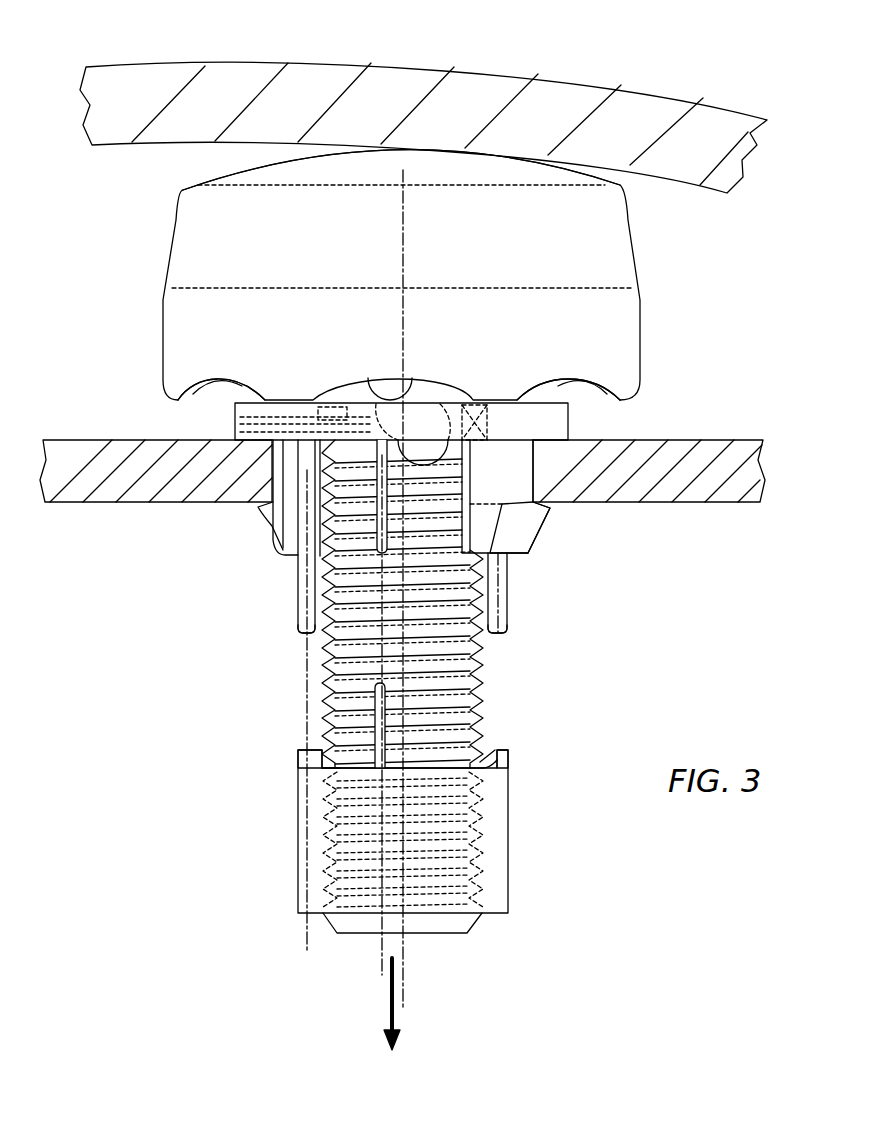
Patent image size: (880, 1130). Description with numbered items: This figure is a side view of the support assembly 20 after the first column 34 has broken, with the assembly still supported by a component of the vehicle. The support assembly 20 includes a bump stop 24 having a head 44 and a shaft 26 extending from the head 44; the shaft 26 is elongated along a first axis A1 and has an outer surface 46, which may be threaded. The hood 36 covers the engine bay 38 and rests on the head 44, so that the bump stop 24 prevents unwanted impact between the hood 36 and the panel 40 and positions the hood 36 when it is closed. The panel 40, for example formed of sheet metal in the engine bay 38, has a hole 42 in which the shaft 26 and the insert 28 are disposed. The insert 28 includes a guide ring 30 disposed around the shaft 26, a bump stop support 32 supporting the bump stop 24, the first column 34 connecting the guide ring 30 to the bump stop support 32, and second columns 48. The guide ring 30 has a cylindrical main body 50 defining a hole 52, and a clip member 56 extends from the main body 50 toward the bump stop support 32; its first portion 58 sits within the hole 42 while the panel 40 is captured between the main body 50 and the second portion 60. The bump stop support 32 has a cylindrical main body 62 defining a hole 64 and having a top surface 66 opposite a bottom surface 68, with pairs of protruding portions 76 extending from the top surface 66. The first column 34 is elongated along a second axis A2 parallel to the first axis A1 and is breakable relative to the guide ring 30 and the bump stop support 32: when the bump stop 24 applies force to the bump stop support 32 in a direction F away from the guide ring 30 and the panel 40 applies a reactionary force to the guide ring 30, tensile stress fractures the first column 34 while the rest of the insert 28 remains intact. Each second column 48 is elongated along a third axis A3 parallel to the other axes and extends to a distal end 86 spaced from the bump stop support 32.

The support assembly 20 is at (80, 377).
The bump stop 24 is at (617, 323).
The shaft 26 is at (438, 485).
The insert 28 is at (386, 855).
The guide ring 30 is at (268, 400).
The bump stop support 32 is at (445, 839).
The first column 34 is at (380, 480).
The hood 36 is at (475, 92).
The engine bay 38 is at (640, 663).
The panel 40 is at (663, 457).
The hole 42 is at (535, 462).
The head 44 is at (176, 221).
The outer surface 46 is at (322, 467).
The second column 48 is at (300, 583).
The main body 50 is at (548, 397).
The hole 52 is at (488, 422).
The clip member 56 is at (258, 510).
The first portion 58 is at (515, 482).
The second portion 60 is at (525, 532).
The main body 62 is at (493, 837).
The hole 64 is at (477, 863).
The top surface 66 is at (328, 772).
The bottom surface 68 is at (493, 915).
The protruding portions 76 is at (300, 762).
The distal end 86 is at (305, 635).
The first axis A1 is at (403, 982).
The second axis A2 is at (382, 960).
The third axis A3 is at (307, 940).
The direction F is at (391, 1007).